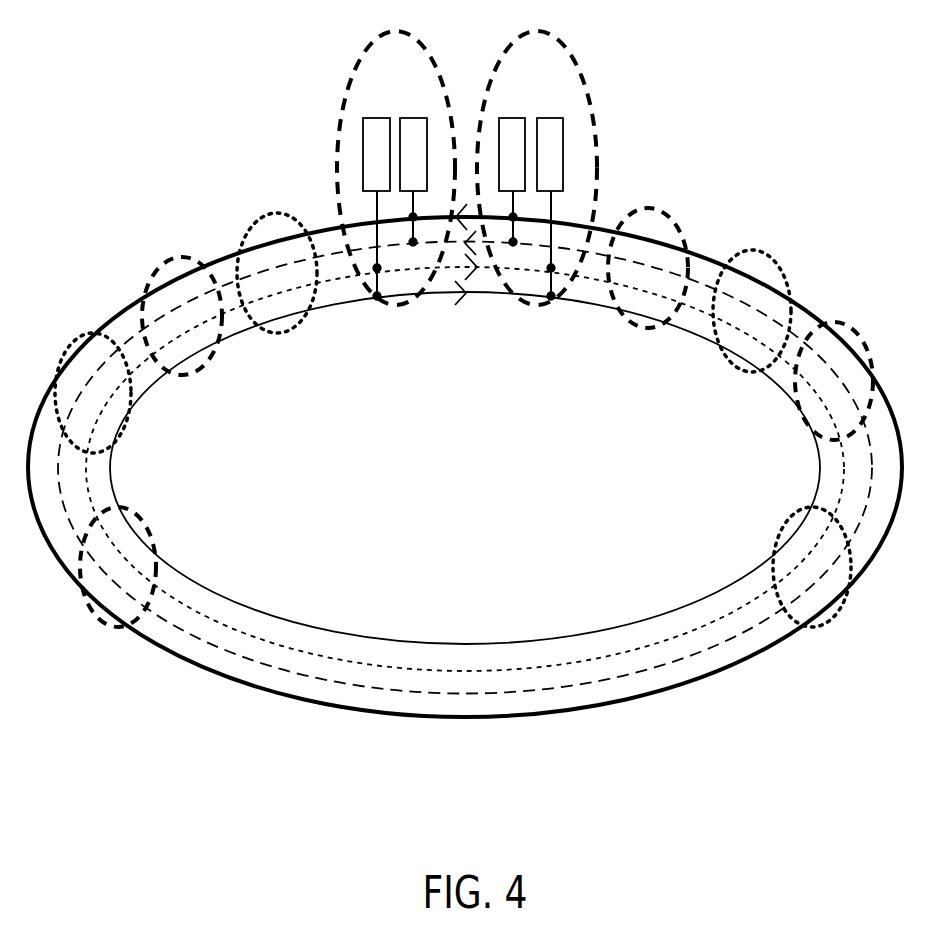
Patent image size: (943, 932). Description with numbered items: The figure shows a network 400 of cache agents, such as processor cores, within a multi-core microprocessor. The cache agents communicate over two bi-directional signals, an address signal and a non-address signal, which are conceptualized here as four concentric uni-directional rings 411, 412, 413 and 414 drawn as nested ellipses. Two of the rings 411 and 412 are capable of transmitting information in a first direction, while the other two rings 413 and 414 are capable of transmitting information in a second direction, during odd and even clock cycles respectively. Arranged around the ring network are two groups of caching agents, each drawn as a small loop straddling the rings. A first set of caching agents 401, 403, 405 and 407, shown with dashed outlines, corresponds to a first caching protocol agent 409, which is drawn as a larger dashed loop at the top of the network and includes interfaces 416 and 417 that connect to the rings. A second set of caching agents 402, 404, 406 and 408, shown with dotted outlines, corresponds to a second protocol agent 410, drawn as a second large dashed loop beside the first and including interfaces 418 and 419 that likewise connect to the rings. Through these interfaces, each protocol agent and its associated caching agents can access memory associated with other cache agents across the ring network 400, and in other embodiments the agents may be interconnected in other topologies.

The network 400 is at (465, 467).
The caching agent 401 is at (98, 573).
The caching agent 402 is at (79, 403).
The caching agent 403 is at (164, 326).
The caching agent 404 is at (258, 291).
The caching agent 405 is at (631, 281).
The caching agent 406 is at (730, 323).
The caching agent 407 is at (816, 391).
The caching agent 408 is at (793, 575).
The first caching protocol agent 409 is at (379, 91).
The second protocol agent 410 is at (518, 91).
The uni-directional ring 411 is at (449, 490).
The uni-directional ring 412 is at (465, 469).
The uni-directional ring 413 is at (465, 469).
The uni-directional ring 414 is at (465, 467).
The interface 416 is at (348, 138).
The interface 417 is at (397, 167).
The interface 418 is at (575, 131).
The interface 419 is at (537, 167).